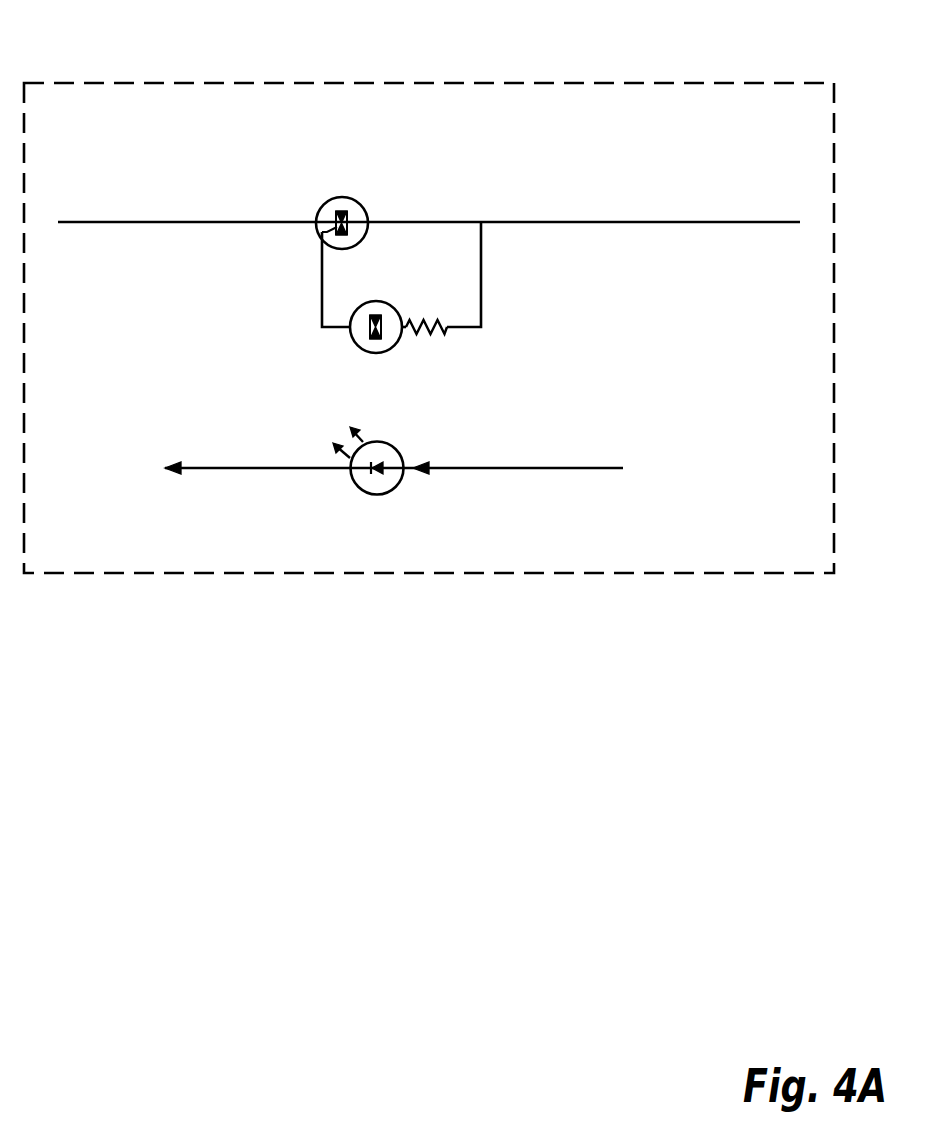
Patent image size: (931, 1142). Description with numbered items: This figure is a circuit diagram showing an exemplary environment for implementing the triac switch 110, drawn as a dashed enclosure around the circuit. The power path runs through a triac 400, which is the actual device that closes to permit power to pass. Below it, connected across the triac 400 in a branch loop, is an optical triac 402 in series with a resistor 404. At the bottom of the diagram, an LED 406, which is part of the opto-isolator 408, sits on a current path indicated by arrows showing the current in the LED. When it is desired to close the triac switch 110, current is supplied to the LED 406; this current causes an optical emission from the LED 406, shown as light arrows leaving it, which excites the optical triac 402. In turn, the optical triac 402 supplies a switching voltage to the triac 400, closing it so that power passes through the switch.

The triac switch 110 is at (429, 298).
The triac 400 is at (357, 204).
The optical triac 402 is at (336, 345).
The resistor 404 is at (426, 339).
The LED 406 is at (395, 486).
The opto-isolator 408 is at (395, 415).